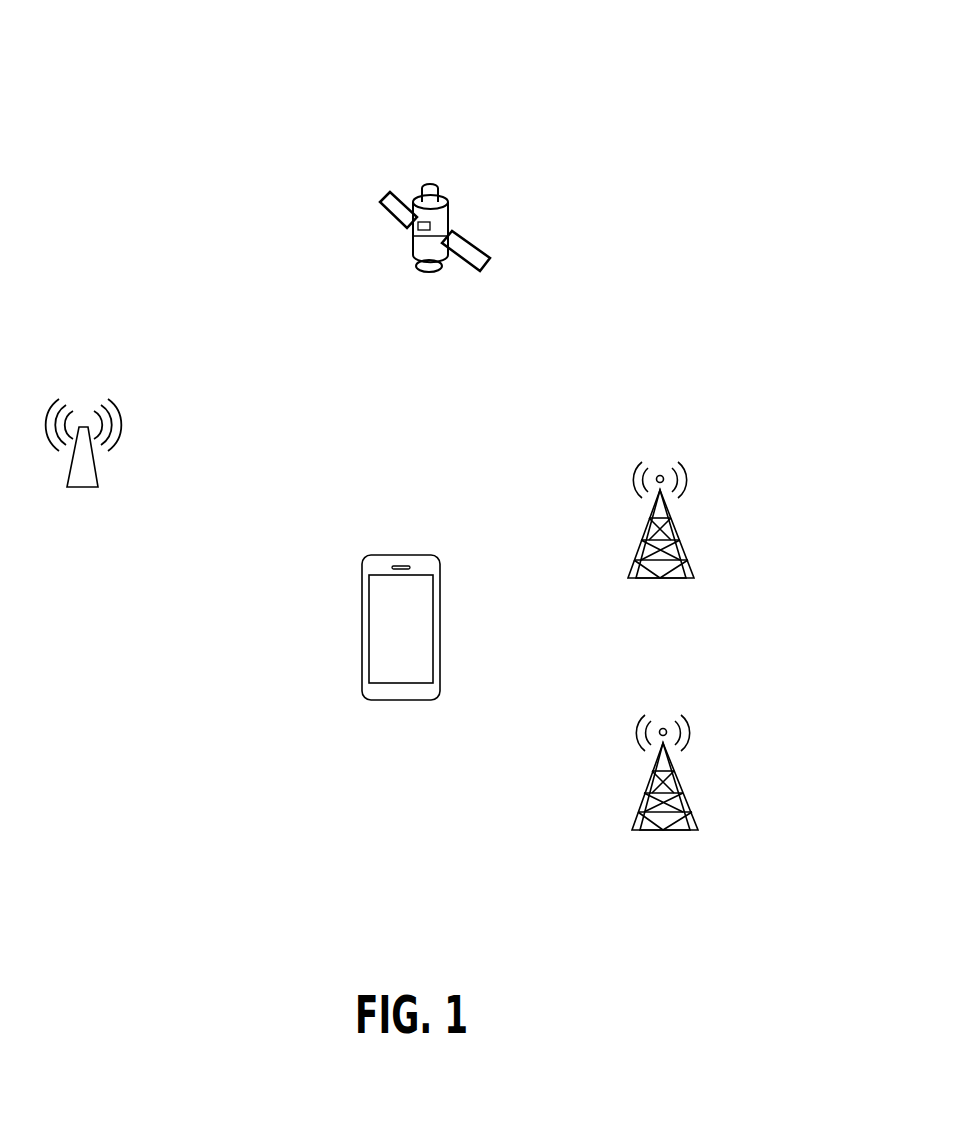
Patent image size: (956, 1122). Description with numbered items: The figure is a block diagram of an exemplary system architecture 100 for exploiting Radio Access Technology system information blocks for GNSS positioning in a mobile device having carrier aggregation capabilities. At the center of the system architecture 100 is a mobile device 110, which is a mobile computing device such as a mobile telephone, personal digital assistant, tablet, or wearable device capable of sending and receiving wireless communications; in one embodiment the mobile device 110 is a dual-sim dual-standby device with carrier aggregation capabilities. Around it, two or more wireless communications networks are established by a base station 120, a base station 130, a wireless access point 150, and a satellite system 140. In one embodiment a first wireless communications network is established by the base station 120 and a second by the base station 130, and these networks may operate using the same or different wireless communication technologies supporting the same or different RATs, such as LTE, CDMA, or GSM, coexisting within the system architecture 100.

The system architecture 100 is at (750, 78).
The mobile device 110 is at (385, 645).
The base station 120 is at (691, 801).
The base station 130 is at (690, 549).
The satellite system 140 is at (495, 253).
The wireless access point 150 is at (97, 471).